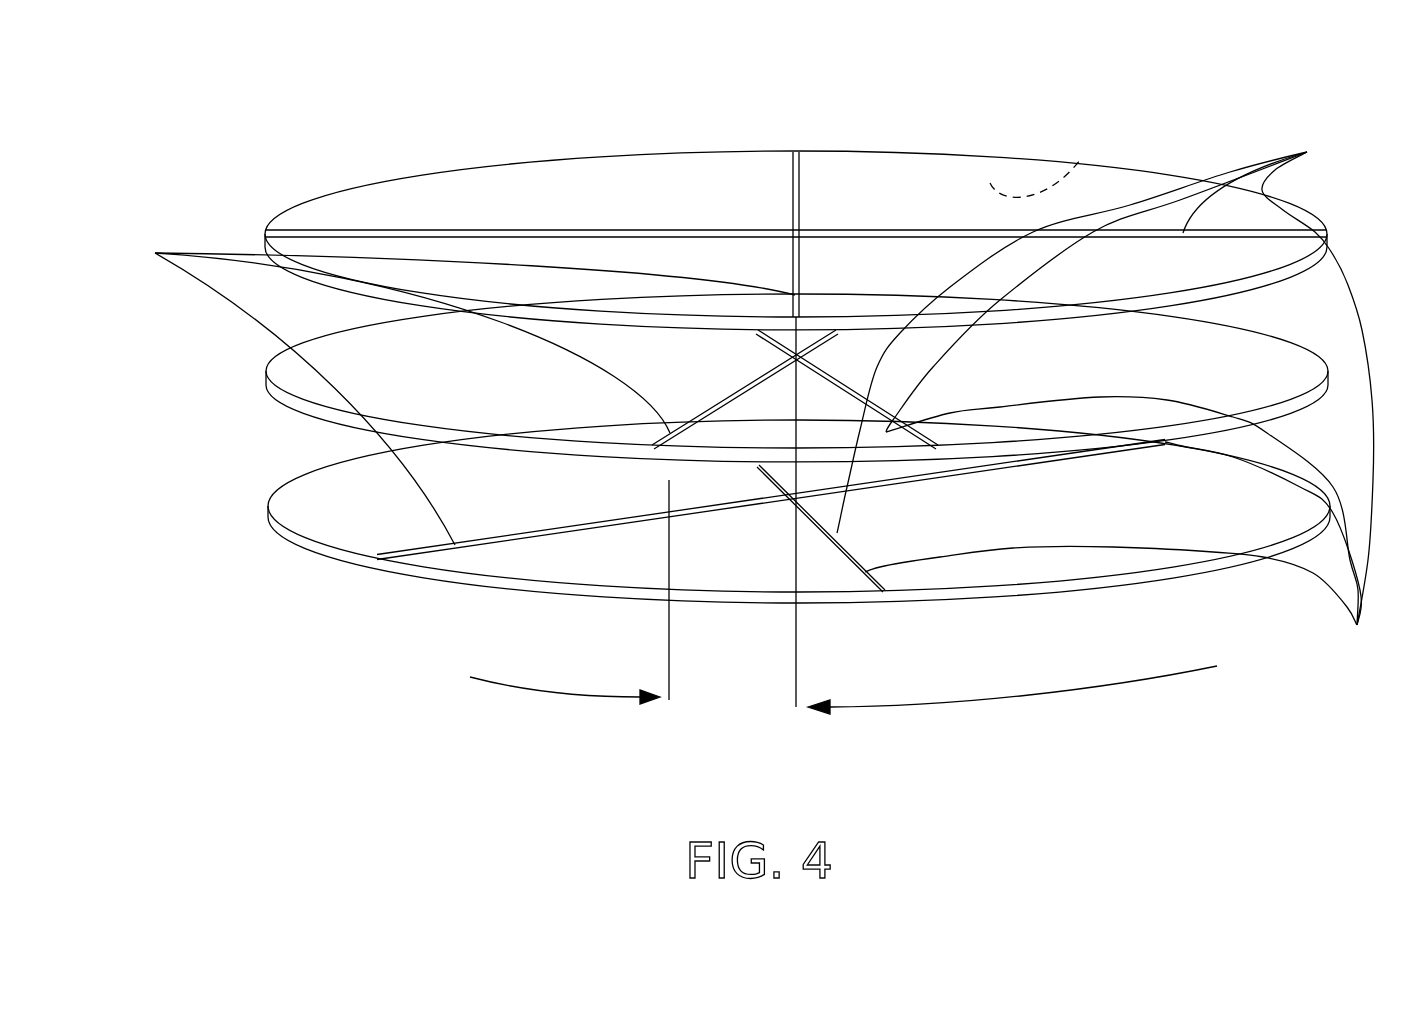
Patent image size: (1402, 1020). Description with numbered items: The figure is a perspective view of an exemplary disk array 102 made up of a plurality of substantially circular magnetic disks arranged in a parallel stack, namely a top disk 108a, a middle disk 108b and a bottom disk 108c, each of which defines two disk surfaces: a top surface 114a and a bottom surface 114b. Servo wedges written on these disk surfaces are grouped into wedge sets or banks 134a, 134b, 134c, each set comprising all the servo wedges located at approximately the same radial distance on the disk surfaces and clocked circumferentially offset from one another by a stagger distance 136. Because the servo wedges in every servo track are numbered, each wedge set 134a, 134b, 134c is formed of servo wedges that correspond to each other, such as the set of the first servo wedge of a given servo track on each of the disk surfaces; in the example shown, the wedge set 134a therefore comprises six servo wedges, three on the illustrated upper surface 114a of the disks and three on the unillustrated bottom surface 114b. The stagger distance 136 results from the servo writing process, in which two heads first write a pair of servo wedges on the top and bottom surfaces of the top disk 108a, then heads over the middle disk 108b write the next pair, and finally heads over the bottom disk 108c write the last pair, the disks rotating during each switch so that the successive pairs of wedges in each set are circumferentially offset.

The disk array 102 is at (736, 377).
The top disk 108a is at (387, 207).
The middle disk 108b is at (283, 368).
The bottom disk 108c is at (300, 527).
The top surface 114a is at (633, 172).
The bottom surface 114b is at (1087, 157).
The wedge set 134a is at (437, 387).
The wedge set 134b is at (1128, 454).
The wedge set 134c is at (1105, 332).
The stagger distance 136 is at (843, 434).